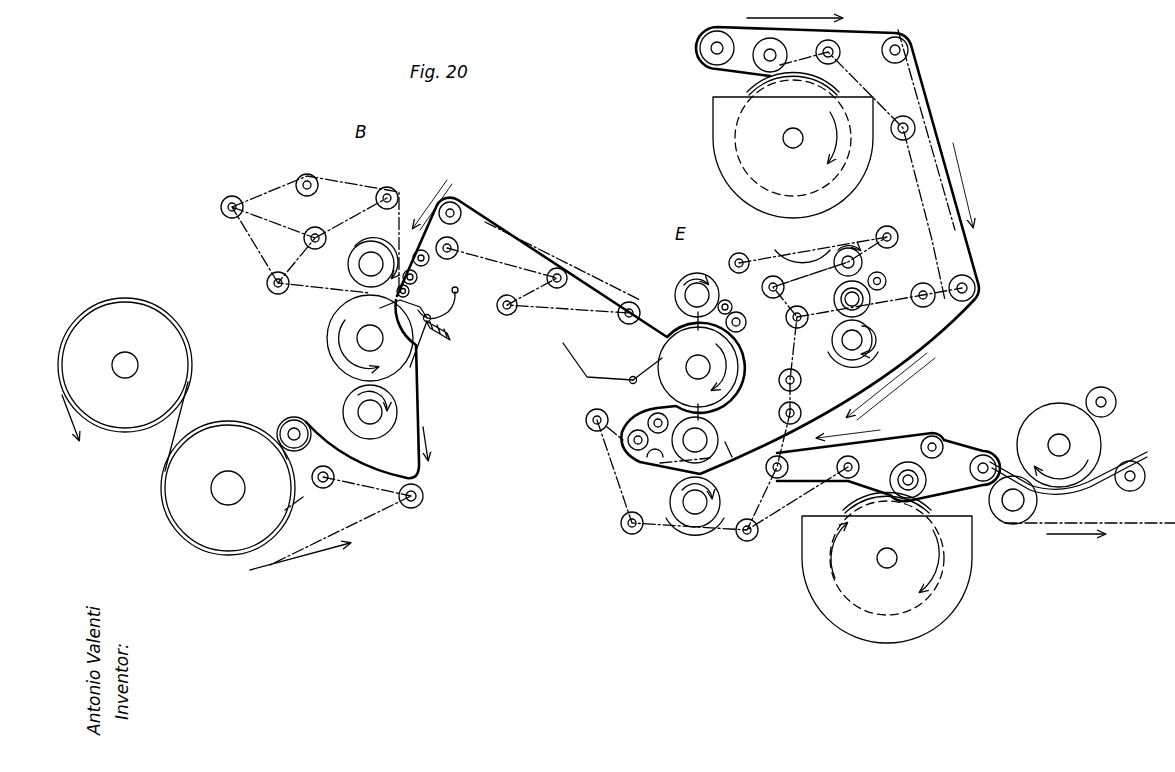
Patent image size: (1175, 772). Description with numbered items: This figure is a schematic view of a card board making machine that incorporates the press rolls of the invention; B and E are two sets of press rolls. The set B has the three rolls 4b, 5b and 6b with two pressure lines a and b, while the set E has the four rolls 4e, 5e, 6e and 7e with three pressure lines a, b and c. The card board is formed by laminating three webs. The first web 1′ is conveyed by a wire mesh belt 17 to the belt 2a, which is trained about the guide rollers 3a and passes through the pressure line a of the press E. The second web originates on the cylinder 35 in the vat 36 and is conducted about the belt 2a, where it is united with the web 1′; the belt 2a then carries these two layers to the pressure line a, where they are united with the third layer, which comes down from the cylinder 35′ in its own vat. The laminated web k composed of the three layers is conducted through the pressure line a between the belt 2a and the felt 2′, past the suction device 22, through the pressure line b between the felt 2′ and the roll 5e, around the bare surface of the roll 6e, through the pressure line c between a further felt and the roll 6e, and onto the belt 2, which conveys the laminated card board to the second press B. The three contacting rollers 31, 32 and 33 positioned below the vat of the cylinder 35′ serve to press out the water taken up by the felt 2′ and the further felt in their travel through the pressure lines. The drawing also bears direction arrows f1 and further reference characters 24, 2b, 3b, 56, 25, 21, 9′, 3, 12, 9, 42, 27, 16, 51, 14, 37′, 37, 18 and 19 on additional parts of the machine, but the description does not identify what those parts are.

The web rollers 24 is at (207, 422).
The laminated web k is at (172, 440).
The frame of unit B 2b is at (346, 186).
The guide rollers of unit B 3b is at (232, 218).
The roll 4b is at (348, 267).
The roll 5b is at (329, 333).
The roll 6b is at (353, 411).
The lever 56 is at (399, 302).
The arm 25 is at (413, 306).
The blade 21 is at (450, 326).
The lever 9′ is at (414, 350).
The web direction f1 is at (757, 268).
The guide rollers 3 is at (451, 245).
The belt 2 is at (597, 318).
The bracket 12 is at (590, 368).
The lever 9 is at (652, 372).
The roll 6e is at (698, 366).
The roll 7e is at (680, 288).
The rollers 42 is at (734, 307).
The roller 27 is at (742, 330).
The roller 16 is at (712, 424).
The roll 5e is at (675, 440).
The guide 51 is at (733, 447).
The suction device 22 is at (643, 455).
The guide rollers 3a is at (586, 420).
The belt 2a is at (710, 543).
The roll 4e is at (681, 503).
The frame bar 14 is at (673, 522).
The roller 37′ is at (752, 63).
The cylinder 35′ is at (770, 82).
The vat 36 is at (720, 141).
The felt 2′ is at (945, 202).
The contacting roller 31 is at (838, 266).
The contacting roller 32 is at (840, 305).
The contacting roller 33 is at (840, 343).
The roller 37 is at (900, 472).
The web 1′ is at (1003, 462).
The cylinder 35 is at (850, 512).
The drum 18 is at (1052, 418).
The wire mesh belt 17 is at (1082, 480).
The roller 19 is at (1008, 517).